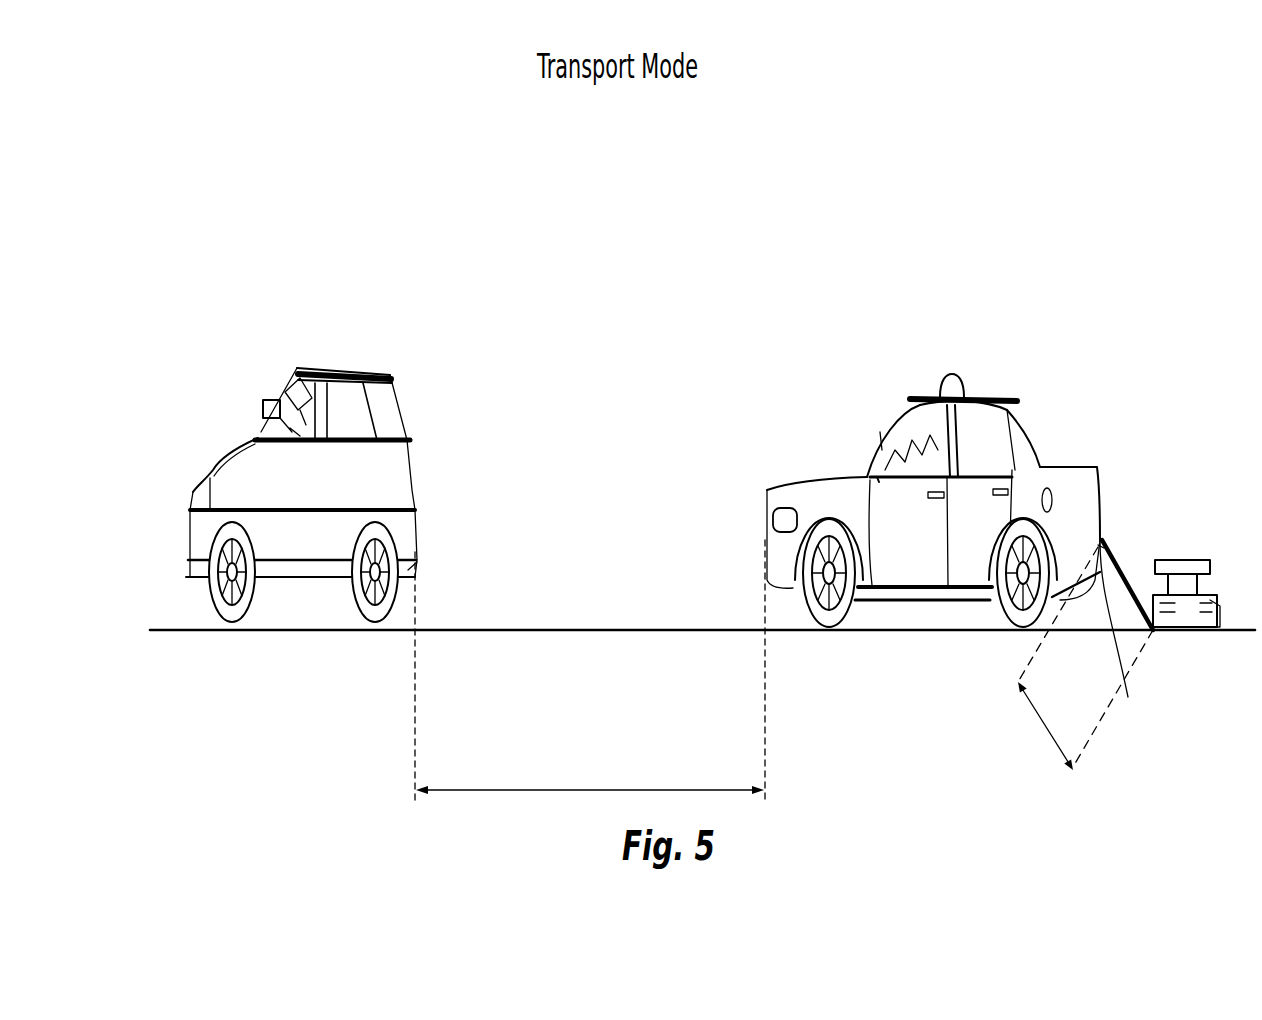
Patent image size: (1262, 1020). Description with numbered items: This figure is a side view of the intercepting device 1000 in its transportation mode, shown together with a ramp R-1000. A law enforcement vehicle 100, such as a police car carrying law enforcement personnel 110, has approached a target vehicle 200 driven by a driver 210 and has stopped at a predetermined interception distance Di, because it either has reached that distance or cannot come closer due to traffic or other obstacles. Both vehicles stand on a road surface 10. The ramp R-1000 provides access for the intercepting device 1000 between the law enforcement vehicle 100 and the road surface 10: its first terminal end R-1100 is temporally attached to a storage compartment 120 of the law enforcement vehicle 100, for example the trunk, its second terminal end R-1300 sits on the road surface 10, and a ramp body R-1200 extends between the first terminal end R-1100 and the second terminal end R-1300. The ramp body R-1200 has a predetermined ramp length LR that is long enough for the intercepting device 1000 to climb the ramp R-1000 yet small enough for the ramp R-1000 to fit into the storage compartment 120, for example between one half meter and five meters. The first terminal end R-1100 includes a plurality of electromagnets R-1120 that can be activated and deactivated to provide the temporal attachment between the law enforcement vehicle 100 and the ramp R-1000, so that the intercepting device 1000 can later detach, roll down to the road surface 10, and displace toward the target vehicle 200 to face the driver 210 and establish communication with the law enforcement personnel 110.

The road surface 10 is at (600, 627).
The law enforcement vehicle 100 is at (933, 459).
The law enforcement personnel 110 is at (923, 402).
The storage compartment 120 is at (877, 477).
The target vehicle 200 is at (320, 403).
The driver 210 is at (290, 378).
The intercepting device 1000 is at (312, 490).
The ramp R-1000 is at (1244, 446).
The first terminal end R-1100 is at (1119, 530).
The ramp body R-1200 is at (1140, 573).
The second terminal end R-1300 is at (1153, 607).
The electromagnets R-1120 is at (1098, 657).
The ramp length LR is at (1043, 726).
The interception distance Di is at (590, 670).